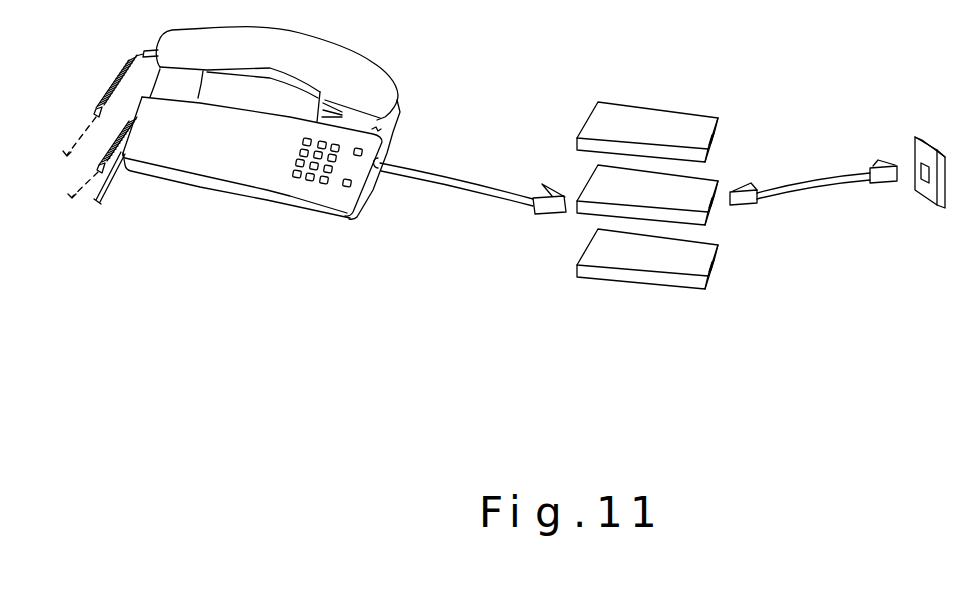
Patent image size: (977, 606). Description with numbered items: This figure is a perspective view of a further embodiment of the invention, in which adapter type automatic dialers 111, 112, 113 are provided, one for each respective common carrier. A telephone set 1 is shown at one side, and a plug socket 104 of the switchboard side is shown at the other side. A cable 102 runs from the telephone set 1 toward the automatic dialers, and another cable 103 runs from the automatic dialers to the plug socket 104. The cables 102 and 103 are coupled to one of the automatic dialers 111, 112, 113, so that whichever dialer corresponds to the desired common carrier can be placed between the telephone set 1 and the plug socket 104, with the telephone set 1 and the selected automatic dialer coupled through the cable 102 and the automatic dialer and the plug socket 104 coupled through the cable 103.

The telephone set 1 is at (292, 203).
The cable 102 is at (472, 190).
The cable 103 is at (830, 187).
The plug socket 104 is at (940, 208).
The automatic dialer 111 is at (645, 102).
The automatic dialer 112 is at (707, 183).
The automatic dialer 113 is at (593, 273).